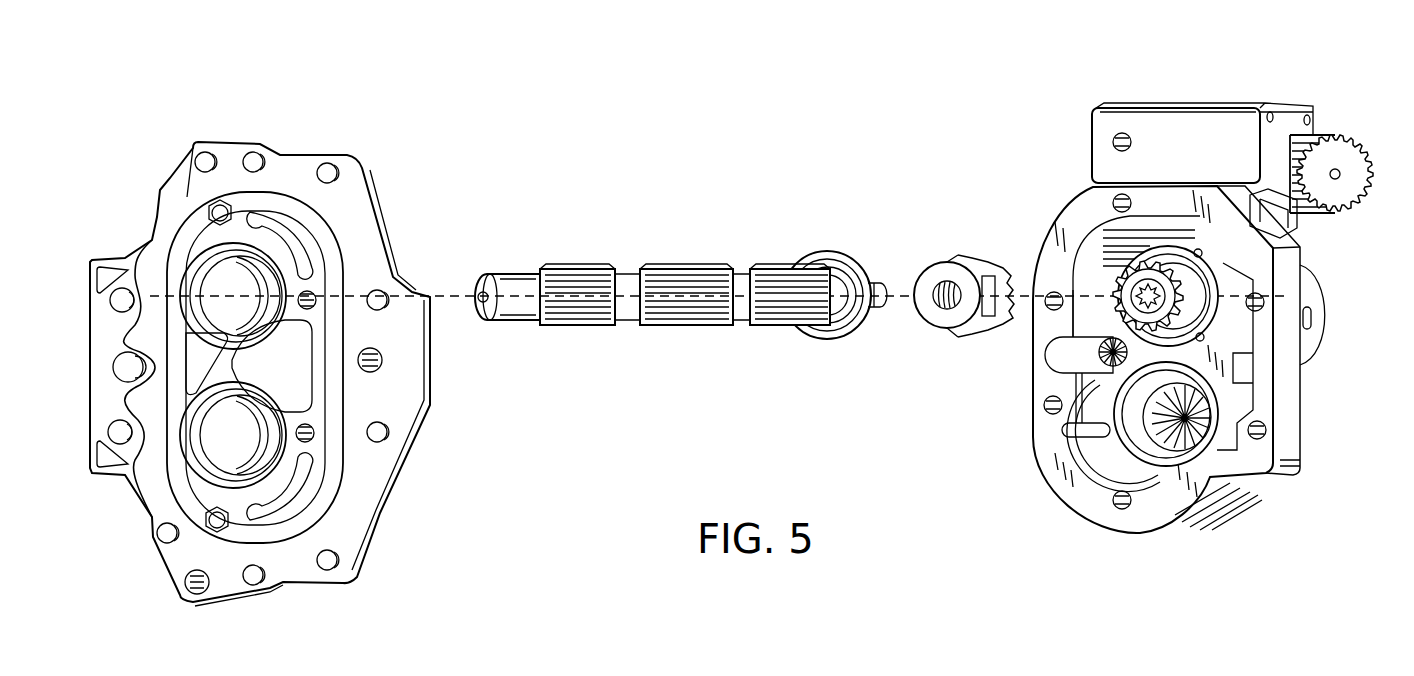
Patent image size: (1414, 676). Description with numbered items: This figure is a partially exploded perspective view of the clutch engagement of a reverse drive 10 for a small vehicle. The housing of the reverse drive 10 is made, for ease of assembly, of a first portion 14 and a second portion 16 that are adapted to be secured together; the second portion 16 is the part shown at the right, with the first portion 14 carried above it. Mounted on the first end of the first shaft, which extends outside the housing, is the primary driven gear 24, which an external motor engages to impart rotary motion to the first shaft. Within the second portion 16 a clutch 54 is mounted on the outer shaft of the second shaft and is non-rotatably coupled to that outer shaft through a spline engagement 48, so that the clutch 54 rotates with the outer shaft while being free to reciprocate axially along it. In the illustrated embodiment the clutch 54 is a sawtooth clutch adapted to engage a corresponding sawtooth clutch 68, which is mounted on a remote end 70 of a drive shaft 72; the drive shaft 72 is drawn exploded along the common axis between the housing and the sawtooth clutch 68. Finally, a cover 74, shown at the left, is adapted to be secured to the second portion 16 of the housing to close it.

The reverse drive 10 is at (1026, 495).
The first portion 14 is at (1167, 107).
The second portion 16 is at (1233, 490).
The primary driven gear 24 is at (1340, 158).
The spline engagement 48 is at (1116, 292).
The clutch 54 is at (1075, 283).
The sawtooth clutch 68 is at (965, 259).
The remote end 70 is at (880, 277).
The drive shaft 72 is at (670, 284).
The cover 74 is at (355, 225).